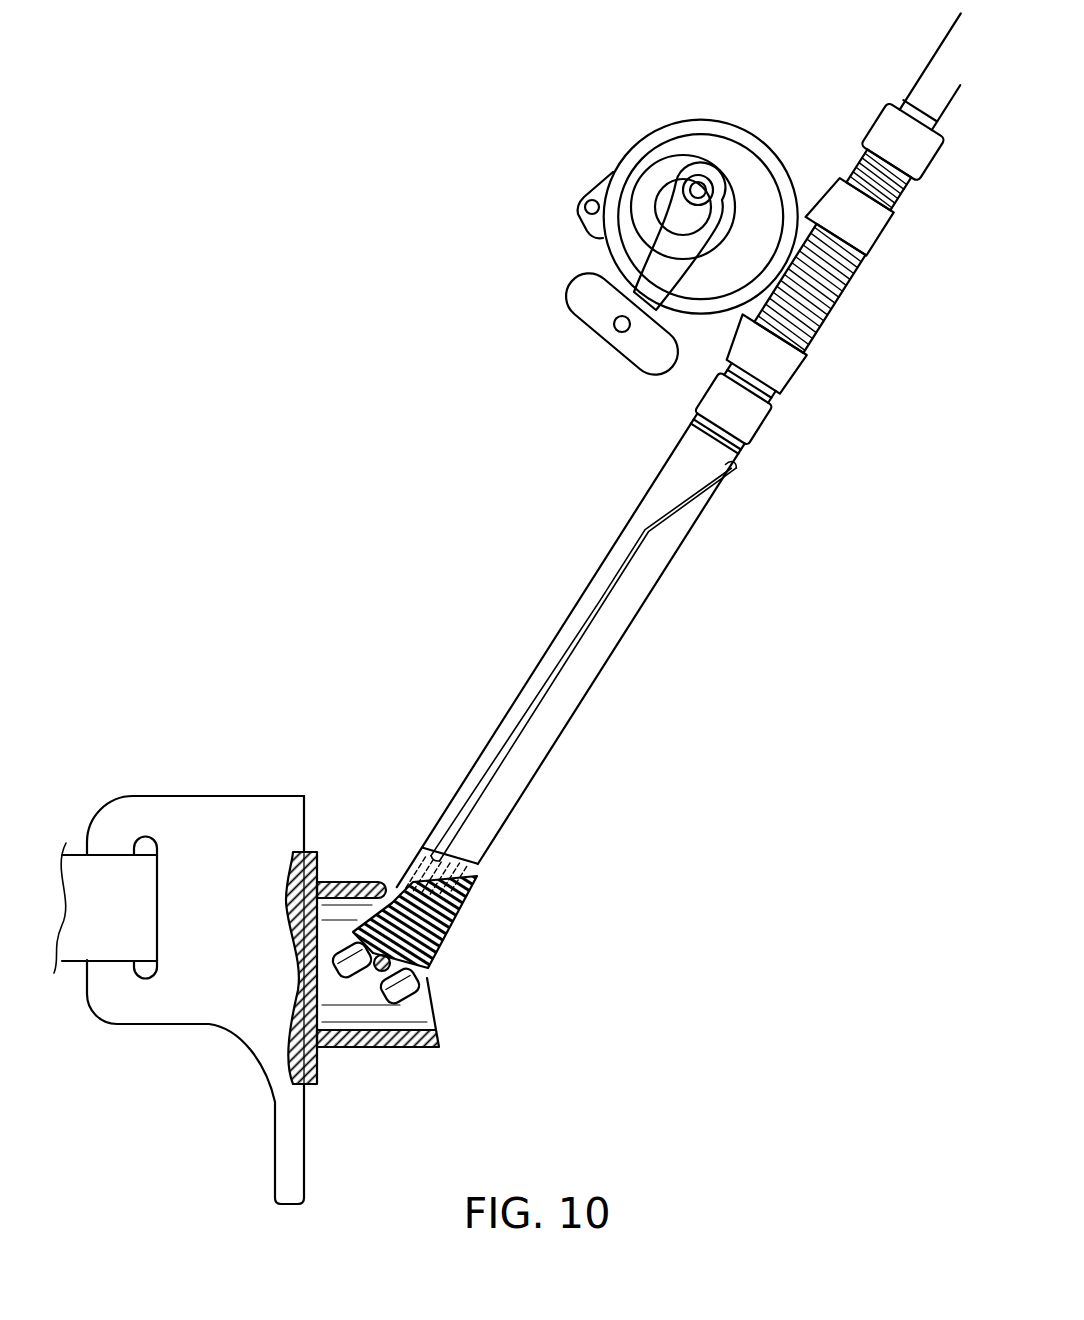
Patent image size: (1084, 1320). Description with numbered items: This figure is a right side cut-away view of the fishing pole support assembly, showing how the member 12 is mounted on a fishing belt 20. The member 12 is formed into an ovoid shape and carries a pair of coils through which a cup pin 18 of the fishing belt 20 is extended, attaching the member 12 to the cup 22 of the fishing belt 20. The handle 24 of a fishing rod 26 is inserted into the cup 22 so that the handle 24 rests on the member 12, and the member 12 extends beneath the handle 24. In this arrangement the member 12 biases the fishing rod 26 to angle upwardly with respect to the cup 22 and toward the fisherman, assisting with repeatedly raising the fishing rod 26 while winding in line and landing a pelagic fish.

The member 12 is at (593, 618).
The cup pin 18 is at (378, 970).
The fishing belt 20 is at (306, 797).
The cup 22 is at (430, 1044).
The handle 24 is at (582, 696).
The fishing rod 26 is at (570, 125).